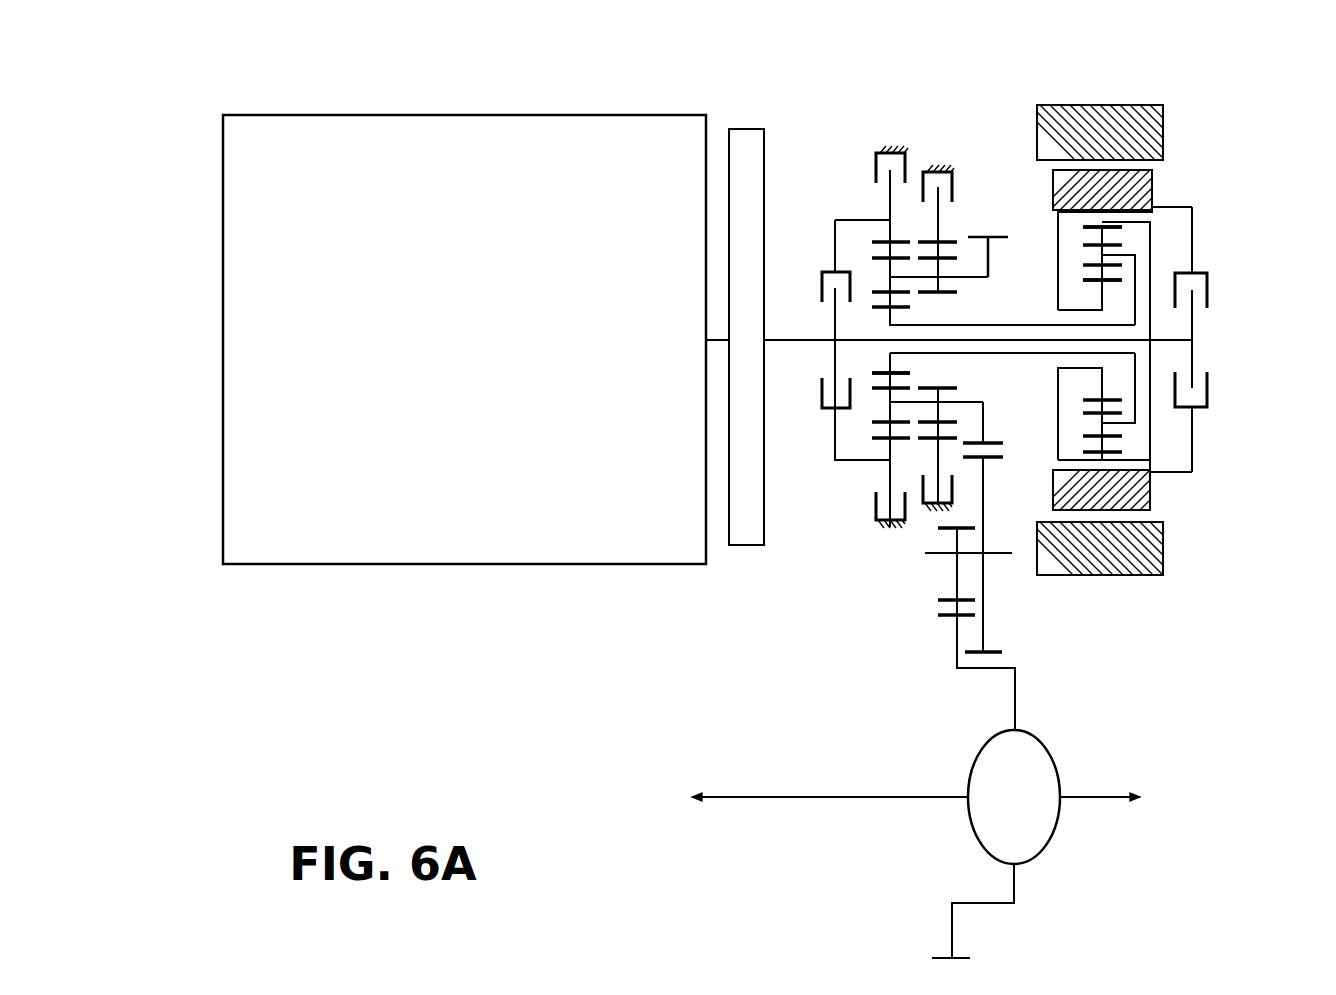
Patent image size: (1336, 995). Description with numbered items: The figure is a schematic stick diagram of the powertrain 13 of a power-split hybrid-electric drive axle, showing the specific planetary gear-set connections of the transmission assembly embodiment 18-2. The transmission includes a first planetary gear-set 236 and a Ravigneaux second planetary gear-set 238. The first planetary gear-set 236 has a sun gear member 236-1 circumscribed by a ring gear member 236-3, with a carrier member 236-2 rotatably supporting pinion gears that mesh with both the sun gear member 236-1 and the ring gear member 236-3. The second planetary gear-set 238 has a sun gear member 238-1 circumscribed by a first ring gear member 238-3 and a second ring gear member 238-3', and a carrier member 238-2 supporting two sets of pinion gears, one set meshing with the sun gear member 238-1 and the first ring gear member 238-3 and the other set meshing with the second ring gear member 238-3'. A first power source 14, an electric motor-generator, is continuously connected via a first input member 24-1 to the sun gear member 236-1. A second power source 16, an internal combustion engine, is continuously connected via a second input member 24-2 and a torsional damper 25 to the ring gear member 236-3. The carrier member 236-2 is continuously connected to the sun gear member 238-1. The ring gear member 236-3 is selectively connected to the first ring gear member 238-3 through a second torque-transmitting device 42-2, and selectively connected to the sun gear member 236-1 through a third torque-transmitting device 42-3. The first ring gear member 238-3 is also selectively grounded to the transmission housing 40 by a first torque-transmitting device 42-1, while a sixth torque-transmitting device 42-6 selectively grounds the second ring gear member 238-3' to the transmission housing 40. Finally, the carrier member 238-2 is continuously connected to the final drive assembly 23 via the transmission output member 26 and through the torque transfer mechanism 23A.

The powertrain 13 is at (573, 663).
The first power source 14 is at (1163, 548).
The second power source 16 is at (424, 564).
The transmission assembly embodiment 18-2 is at (1007, 90).
The final drive assembly 23 is at (1057, 770).
The torque transfer mechanism 23A is at (998, 617).
The first input member 24-1 is at (1082, 368).
The second input member 24-2 is at (785, 340).
The torsional damper 25 is at (746, 129).
The transmission output member 26 is at (983, 435).
The transmission housing 40 is at (897, 152).
The first torque-transmitting device 42-1 is at (875, 168).
The second torque-transmitting device 42-2 is at (827, 272).
The third torque-transmitting device 42-3 is at (1207, 388).
The sixth torque-transmitting device 42-6 is at (952, 187).
The first planetary gear-set 236 is at (1155, 437).
The sun gear member 236-1 is at (1112, 282).
The carrier member 236-2 is at (1137, 360).
The ring gear member 236-3 is at (1113, 222).
The second planetary gear-set 238 is at (893, 605).
The sun gear member 238-1 is at (903, 373).
The carrier member 238-2 is at (971, 278).
The first ring gear member 238-3 is at (859, 488).
The second ring gear member 238-3' is at (916, 510).